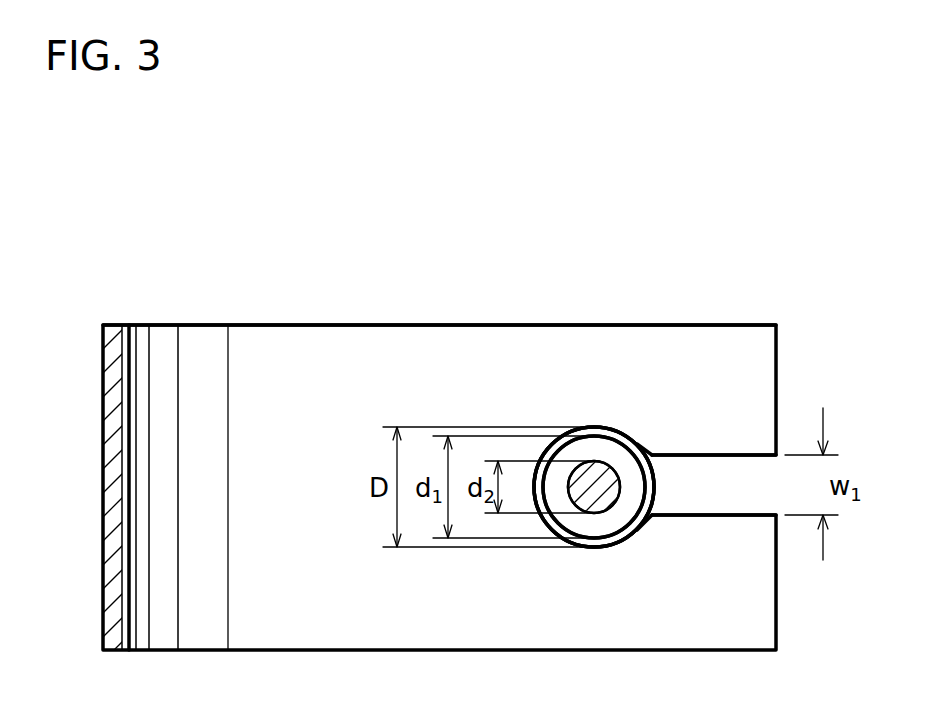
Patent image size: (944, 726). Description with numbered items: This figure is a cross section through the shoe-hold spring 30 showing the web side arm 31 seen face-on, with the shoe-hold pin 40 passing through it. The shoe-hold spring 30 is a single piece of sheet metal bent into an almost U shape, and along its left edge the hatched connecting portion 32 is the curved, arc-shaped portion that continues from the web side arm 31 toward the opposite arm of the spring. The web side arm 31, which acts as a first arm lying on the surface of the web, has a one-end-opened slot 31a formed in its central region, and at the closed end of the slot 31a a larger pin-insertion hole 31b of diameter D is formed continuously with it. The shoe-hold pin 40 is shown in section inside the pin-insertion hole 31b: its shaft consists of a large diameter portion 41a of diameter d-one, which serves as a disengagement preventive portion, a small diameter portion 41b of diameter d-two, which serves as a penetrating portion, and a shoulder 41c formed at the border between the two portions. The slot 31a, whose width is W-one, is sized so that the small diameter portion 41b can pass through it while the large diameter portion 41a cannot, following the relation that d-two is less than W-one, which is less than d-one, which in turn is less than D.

The shoe-hold spring 30 is at (106, 322).
The web side arm 31 is at (353, 325).
The slot 31a is at (724, 515).
The pin-insertion hole 31b is at (630, 526).
The connecting portion 32 is at (103, 490).
The shoe-hold pin 40 is at (655, 483).
The large diameter portion 41a is at (645, 450).
The small diameter portion 41b is at (608, 460).
The shoulder 41c is at (594, 448).